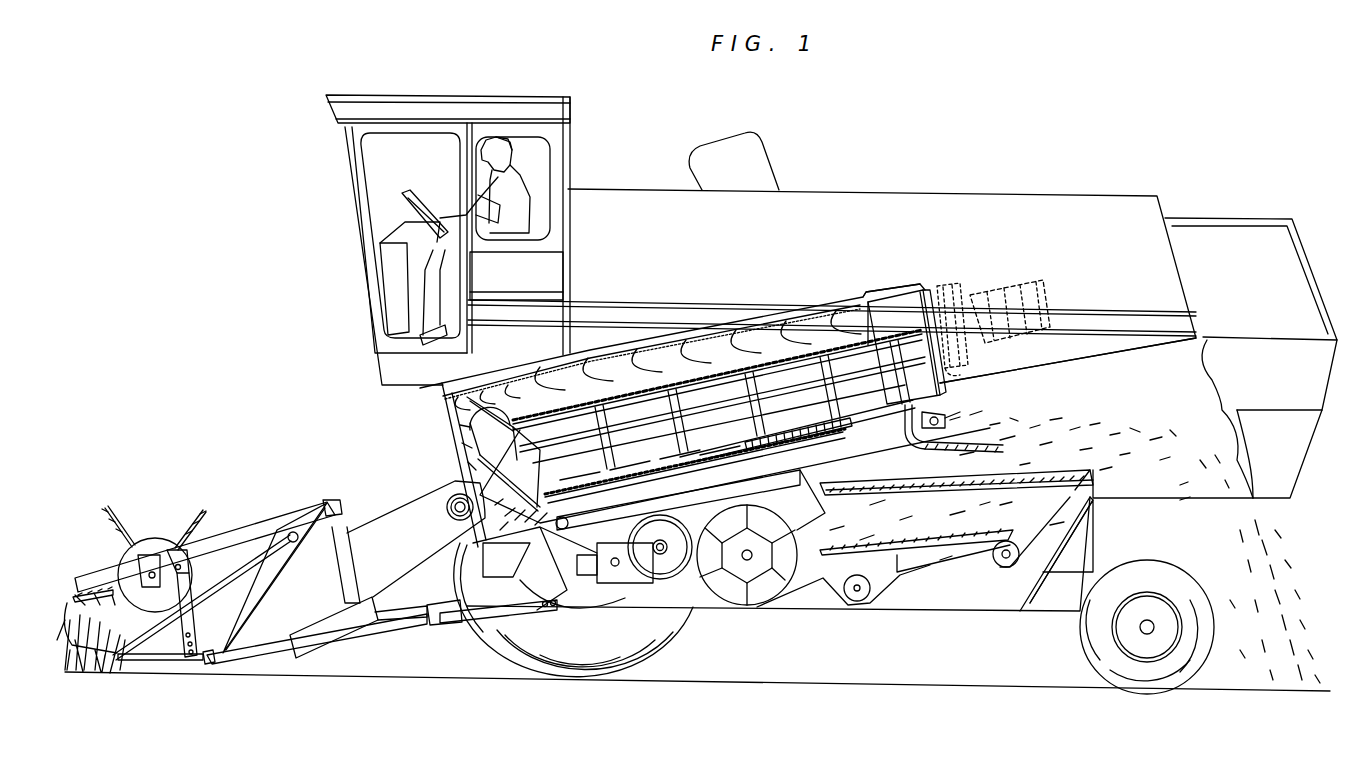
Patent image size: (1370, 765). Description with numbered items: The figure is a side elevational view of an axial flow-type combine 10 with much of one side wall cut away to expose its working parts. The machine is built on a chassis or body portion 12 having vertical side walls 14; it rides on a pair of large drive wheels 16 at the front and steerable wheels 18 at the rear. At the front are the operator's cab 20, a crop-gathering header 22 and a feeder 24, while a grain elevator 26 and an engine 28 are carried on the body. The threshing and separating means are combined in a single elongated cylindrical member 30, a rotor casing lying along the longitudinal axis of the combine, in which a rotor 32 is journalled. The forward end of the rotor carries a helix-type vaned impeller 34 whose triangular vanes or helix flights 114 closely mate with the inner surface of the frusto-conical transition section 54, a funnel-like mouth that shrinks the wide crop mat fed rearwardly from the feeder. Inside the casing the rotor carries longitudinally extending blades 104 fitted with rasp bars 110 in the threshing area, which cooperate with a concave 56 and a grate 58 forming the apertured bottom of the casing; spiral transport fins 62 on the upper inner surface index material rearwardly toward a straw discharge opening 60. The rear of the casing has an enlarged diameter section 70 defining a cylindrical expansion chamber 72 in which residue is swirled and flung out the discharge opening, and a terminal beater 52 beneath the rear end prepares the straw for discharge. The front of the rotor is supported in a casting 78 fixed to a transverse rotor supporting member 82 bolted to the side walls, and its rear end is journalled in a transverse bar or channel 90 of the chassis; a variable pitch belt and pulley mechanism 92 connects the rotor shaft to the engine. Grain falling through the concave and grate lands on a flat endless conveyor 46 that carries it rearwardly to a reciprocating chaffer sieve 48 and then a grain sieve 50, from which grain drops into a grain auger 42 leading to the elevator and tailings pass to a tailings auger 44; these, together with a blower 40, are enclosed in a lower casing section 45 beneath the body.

The axial flow-type combine 10 is at (967, 176).
The chassis or body portion 12 is at (1122, 386).
The vertical side walls 14 is at (1285, 447).
The drive wheels 16 is at (666, 634).
The steerable or dirigible wheels 18 is at (1185, 597).
The cab 20 is at (522, 281).
The crop-gathering header 22 is at (275, 552).
The feeder 24 is at (400, 530).
The grain elevator 26 is at (753, 165).
The engine 28 is at (1043, 288).
The cylindrical member (rotor casing) 30 is at (597, 354).
The rotor 32 is at (850, 426).
The vaned impeller 34 is at (462, 428).
The blower 40 is at (734, 598).
The grain auger 42 is at (868, 590).
The tailings auger 44 is at (990, 568).
The lower casing section 45 is at (1046, 554).
The endless conveyor 46 is at (780, 488).
The chaffer sieve 48 is at (1080, 495).
The grain sieve 50 is at (944, 550).
The terminal beater 52 is at (940, 421).
The frusto-conical transition section 54 is at (505, 394).
The concave 56 is at (626, 472).
The grate 58 is at (797, 435).
The straw discharge opening 60 is at (930, 400).
The spiral transport fins 62 is at (773, 343).
The enlarged diameter section 70 is at (892, 289).
The cylindrical expansion chamber 72 is at (918, 304).
The casting 78 is at (460, 448).
The transverse rotor supporting member 82 is at (463, 469).
The transverse bar or channel 90 is at (959, 365).
The variable pitch belt and pulley mechanism 92 is at (948, 283).
The longitudinally extending blades 104 is at (554, 490).
The rasp bars 110 is at (608, 385).
The vanes or helix flights 114 is at (480, 416).